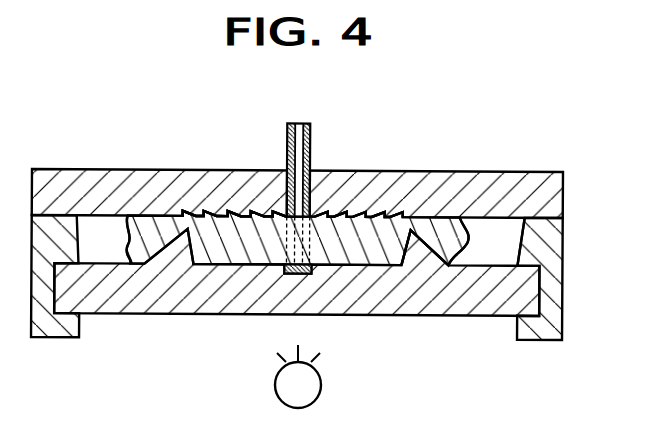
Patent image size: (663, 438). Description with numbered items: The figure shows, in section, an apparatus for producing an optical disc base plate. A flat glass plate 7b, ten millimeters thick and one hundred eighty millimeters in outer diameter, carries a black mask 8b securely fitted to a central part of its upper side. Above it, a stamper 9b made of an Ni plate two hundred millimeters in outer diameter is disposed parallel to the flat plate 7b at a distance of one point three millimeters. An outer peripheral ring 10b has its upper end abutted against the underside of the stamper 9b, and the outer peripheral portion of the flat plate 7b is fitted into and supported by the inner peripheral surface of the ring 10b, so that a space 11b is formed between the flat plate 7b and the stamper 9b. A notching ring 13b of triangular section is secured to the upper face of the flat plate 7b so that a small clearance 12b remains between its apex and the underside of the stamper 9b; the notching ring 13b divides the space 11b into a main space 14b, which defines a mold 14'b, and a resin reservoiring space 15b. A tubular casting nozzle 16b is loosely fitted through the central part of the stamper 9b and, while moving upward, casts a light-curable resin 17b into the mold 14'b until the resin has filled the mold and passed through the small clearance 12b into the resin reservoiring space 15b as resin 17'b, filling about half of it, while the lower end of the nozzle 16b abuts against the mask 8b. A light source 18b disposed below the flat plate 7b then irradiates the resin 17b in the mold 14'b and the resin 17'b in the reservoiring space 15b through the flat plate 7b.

The flat glass plate 7b is at (482, 305).
The black mask 8b is at (290, 277).
The stamper 9b is at (553, 190).
The outer peripheral ring 10b is at (553, 258).
The space 11b is at (284, 168).
The small clearance 12b is at (413, 224).
The notching ring 13b is at (413, 245).
The main space 14b is at (357, 227).
The mold 14'b is at (359, 174).
The resin reservoiring space 15b is at (500, 230).
The tubular casting nozzle 16b is at (287, 133).
The light-curable resin 17b is at (242, 218).
The light-curable resin in the resin reservoiring space 17'b is at (113, 195).
The light source 18b is at (275, 381).